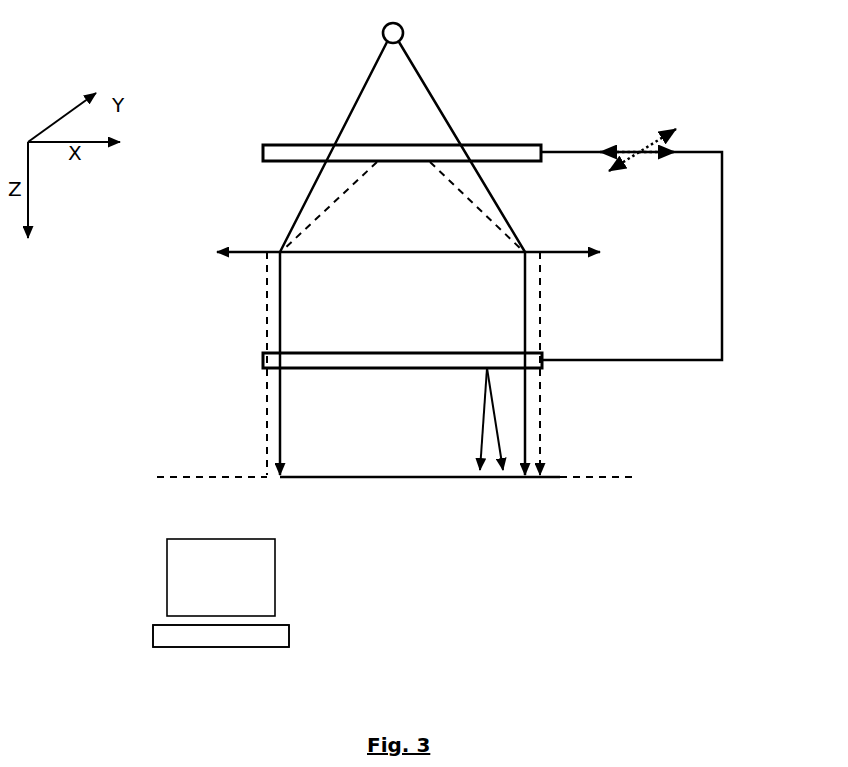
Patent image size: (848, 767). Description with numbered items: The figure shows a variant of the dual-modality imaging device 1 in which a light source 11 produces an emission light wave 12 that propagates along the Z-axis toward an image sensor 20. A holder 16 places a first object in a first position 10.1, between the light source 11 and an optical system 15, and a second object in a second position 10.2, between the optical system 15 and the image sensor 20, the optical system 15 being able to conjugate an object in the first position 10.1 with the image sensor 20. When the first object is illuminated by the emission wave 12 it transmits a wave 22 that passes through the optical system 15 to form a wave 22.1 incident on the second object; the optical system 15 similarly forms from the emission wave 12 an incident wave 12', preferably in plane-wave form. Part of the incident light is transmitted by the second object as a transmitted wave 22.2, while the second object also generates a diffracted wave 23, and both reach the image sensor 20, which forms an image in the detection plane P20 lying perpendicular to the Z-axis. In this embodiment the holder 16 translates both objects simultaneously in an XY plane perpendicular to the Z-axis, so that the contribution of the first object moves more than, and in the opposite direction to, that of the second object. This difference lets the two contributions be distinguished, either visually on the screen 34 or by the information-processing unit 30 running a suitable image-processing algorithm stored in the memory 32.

The measuring system 1 is at (198, 64).
The light source 11 is at (368, 38).
The emission light wave 12 is at (421, 147).
The first position 10.1 is at (260, 152).
The wave transmitted by the first object 22 is at (469, 189).
The holder 16 is at (725, 240).
The optical system 15 is at (250, 258).
The incident wave 12' is at (464, 310).
The wave incident on the second object 22.1 is at (534, 298).
The second position 10.2 is at (260, 360).
The transmitted wave 22.2 is at (525, 395).
The diffracted wave 23 is at (480, 449).
The image sensor 20 is at (562, 477).
The detection plane P20 is at (181, 477).
The screen 34 is at (279, 580).
The information-processing unit 30 is at (267, 634).
The memory 32 is at (221, 636).